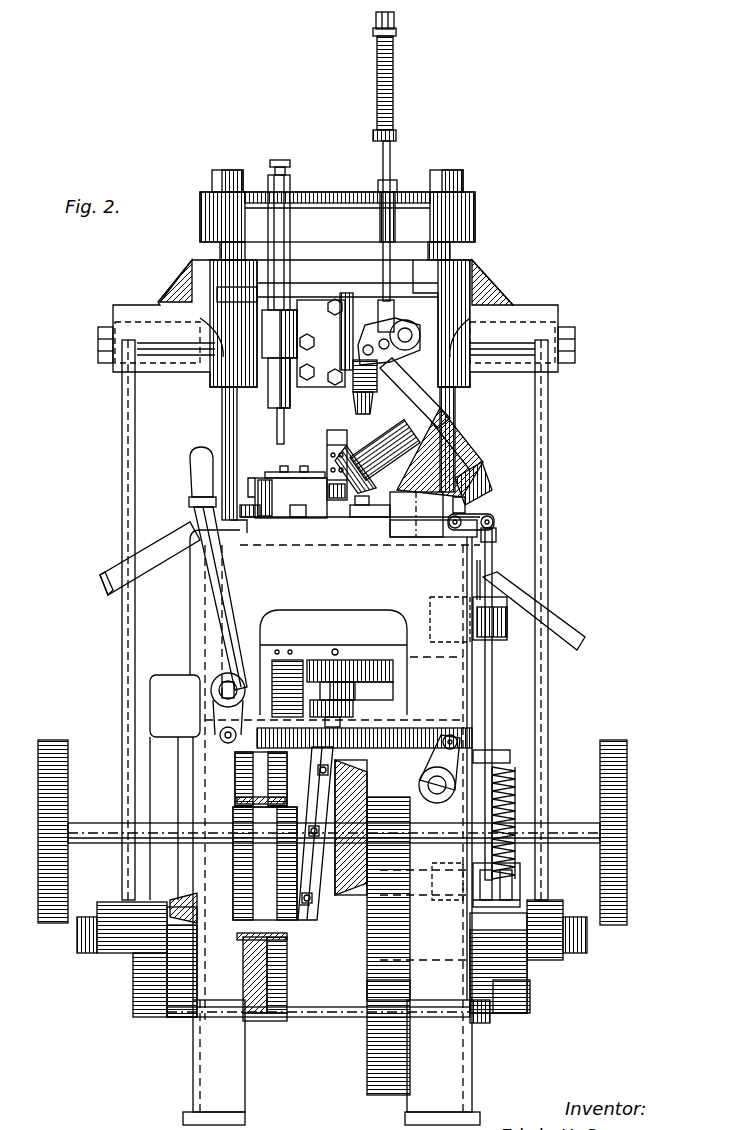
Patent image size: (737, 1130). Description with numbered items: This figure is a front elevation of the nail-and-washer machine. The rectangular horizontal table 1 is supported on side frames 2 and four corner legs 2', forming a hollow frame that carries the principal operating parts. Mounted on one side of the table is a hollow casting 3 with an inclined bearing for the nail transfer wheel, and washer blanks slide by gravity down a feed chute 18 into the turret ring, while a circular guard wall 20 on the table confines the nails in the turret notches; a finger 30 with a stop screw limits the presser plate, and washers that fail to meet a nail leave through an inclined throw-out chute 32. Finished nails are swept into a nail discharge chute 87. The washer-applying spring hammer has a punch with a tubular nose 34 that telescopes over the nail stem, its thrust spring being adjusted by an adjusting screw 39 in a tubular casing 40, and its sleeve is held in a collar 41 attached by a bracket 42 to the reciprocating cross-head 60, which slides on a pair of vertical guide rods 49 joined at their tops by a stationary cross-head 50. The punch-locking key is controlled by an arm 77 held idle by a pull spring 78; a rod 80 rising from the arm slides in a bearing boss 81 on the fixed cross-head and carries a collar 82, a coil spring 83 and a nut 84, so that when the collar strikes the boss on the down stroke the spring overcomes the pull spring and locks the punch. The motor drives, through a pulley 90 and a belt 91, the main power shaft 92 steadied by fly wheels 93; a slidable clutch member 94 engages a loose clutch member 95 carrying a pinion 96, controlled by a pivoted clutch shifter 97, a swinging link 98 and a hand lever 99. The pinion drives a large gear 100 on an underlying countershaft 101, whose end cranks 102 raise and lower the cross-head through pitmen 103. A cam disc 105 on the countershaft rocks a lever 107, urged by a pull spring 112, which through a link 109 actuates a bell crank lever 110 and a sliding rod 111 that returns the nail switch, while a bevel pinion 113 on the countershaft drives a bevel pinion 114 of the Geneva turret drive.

The table 1 is at (331, 775).
The side frames 2 is at (330, 837).
The corner legs 2' is at (331, 1062).
The hollow casting 3 is at (180, 417).
The feed chute 18 is at (200, 242).
The circular guard wall 20 is at (297, 518).
The finger 30 is at (268, 472).
The throw-out chute 32 is at (151, 560).
The tubular nose 34 is at (285, 423).
The adjusting screw 39 is at (278, 160).
The tubular casing 40 is at (291, 268).
The collar 41 is at (263, 339).
The bracket 42 is at (302, 358).
The vertical guide rods 49 is at (220, 428).
The stationary cross-head 50 is at (326, 228).
The reciprocating cross-head 60 is at (206, 377).
The arm 77 is at (376, 338).
The pull spring 78 is at (360, 400).
The rod 80 is at (383, 269).
The bearing boss 81 is at (378, 223).
The collar 82 is at (397, 136).
The coil spring 83 is at (394, 79).
The nut 84 is at (398, 36).
The nail discharge chute 87 is at (522, 618).
The pulley 90 is at (265, 1025).
The belt 91 is at (261, 790).
The main power shaft 92 is at (167, 822).
The fly wheels 93 is at (63, 782).
The slidable clutch member 94 is at (317, 906).
The clutch member 95 is at (354, 784).
The pinion 96 is at (392, 799).
The pivoted clutch shifter 97 is at (300, 778).
The swinging link 98 is at (383, 736).
The hand lever 99 is at (198, 491).
The large gear 100 is at (367, 1080).
The countershaft 101 is at (332, 1017).
The cranks 102 is at (103, 957).
The pitmen 103 is at (122, 502).
The cam disc 105 is at (520, 1012).
The lever 107 is at (482, 897).
The link 109 is at (492, 678).
The bell crank lever 110 is at (463, 516).
The sliding rod 111 is at (466, 481).
The pull spring 112 is at (515, 793).
The bevel pinion 113 is at (255, 1015).
The bevel pinion 114 is at (177, 908).